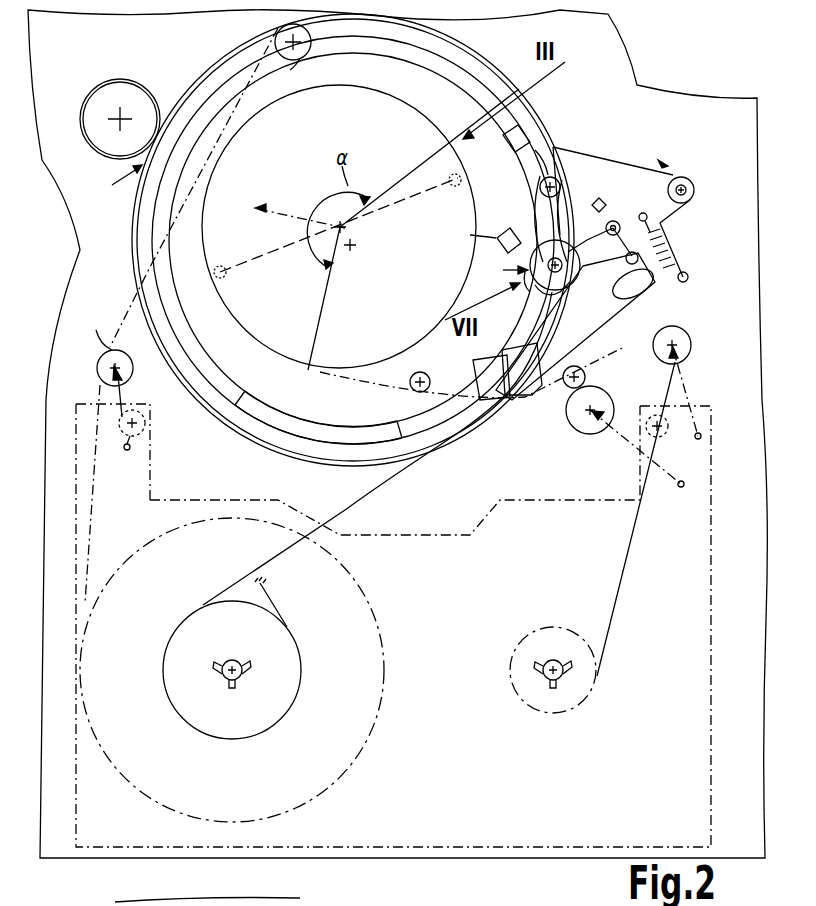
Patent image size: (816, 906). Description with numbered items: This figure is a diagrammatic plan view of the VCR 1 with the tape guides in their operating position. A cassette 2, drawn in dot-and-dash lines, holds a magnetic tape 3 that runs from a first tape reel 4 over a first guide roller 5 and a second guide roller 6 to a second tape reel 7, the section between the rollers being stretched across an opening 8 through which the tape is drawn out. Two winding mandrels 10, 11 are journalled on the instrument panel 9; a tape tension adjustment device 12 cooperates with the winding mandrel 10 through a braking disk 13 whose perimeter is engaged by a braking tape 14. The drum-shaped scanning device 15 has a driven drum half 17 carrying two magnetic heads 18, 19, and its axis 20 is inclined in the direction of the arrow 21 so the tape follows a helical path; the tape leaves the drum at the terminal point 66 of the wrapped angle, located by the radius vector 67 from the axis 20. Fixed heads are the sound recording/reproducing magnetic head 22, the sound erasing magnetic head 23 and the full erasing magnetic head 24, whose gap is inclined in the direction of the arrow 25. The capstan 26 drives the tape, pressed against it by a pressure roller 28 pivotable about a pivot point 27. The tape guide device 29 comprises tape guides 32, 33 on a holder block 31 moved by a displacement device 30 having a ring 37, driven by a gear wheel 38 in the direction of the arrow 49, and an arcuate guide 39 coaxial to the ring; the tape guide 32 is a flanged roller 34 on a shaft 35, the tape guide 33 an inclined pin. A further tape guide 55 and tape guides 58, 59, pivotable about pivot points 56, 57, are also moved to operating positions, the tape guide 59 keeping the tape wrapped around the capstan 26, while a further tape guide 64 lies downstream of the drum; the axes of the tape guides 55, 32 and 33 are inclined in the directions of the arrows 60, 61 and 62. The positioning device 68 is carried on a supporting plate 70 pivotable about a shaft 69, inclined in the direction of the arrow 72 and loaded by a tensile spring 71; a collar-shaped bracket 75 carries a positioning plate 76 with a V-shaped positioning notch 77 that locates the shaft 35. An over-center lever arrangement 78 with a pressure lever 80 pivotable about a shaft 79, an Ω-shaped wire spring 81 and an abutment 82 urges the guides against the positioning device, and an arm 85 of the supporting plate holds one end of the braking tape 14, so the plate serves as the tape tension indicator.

The VCR apparatus 1 is at (60, 270).
The cassette 2 is at (714, 630).
The magnetic tape 3 is at (122, 308).
The first tape reel 4 is at (372, 702).
The first guide roller 5 is at (141, 412).
The second guide roller 6 is at (660, 412).
The second tape reel 7 is at (515, 690).
The opening of the cassette 8 is at (152, 434).
The instrument panel 9 is at (58, 132).
The winding mandrel 10 is at (234, 660).
The winding mandrel 11 is at (548, 660).
The tape tension adjustment device 12 is at (198, 598).
The braking disk 13 is at (165, 672).
The braking tape 14 is at (362, 500).
The drum-shaped scanning device 15 is at (275, 350).
The drum half 17 is at (328, 92).
The magnetic head 18 is at (228, 275).
The magnetic head 19 is at (455, 187).
The axis of the scanning device 20 is at (348, 228).
The arrow 21 is at (285, 205).
The recording/reproducing magnetic head 22 is at (528, 397).
The erasing magnetic head 23 is at (495, 402).
The erasing magnetic head 24 is at (498, 247).
The arrow 25 is at (474, 228).
The driving capstan 26 is at (585, 372).
The pivot point 27 is at (680, 490).
The pressure roller 28 is at (580, 432).
The tape guide device 29 is at (503, 138).
The displacement device 30 is at (87, 202).
The holder block 31 is at (540, 148).
The tape guide 32 is at (484, 272).
The tape guide 33 is at (575, 165).
The roller 34 is at (505, 267).
The shaft 35 is at (606, 228).
The ring 37 is at (138, 215).
The driving gear wheel 38 is at (100, 88).
The arcuate guide 39 is at (172, 306).
The arrow 49 is at (172, 97).
The further tape guide 55 is at (302, 72).
The pivot point 56 is at (126, 451).
The pivot point 57 is at (697, 440).
The tape guide 58 is at (97, 366).
The tape guide 59 is at (692, 340).
The arrow 60 is at (276, 26).
The arrow 61 is at (530, 218).
The arrow 62 is at (562, 198).
The further tape guide 64 is at (419, 392).
The terminal point 66 is at (455, 150).
The radius vector 67 is at (408, 178).
The positioning device 68 is at (568, 295).
The shaft 69 is at (695, 186).
The supporting plate 70 is at (690, 212).
The tensile spring 71 is at (680, 248).
The arrow 72 is at (668, 166).
The bracket 75 is at (524, 292).
The positioning plate 76 is at (608, 292).
The V-shaped positioning notch 77 is at (540, 296).
The over-center lever arrangement 78 is at (656, 292).
The shaft 79 is at (612, 221).
The pressure lever 80 is at (620, 222).
The wire spring 81 is at (633, 265).
The abutment 82 is at (599, 197).
The arm 85 is at (690, 272).